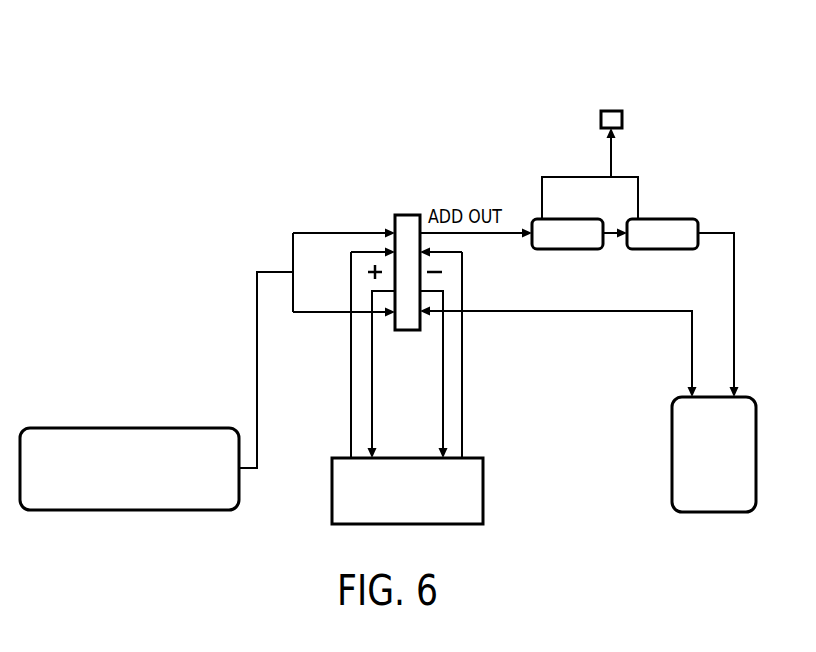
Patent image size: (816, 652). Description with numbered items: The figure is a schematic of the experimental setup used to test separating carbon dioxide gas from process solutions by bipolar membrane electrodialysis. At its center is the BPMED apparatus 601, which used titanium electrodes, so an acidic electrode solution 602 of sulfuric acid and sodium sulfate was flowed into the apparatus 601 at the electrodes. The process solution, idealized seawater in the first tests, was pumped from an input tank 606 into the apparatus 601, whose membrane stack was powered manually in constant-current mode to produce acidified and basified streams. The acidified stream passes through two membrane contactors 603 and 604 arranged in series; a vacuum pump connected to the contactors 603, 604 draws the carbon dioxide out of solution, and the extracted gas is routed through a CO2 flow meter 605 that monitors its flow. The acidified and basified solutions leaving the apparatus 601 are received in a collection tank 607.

The BPMED apparatus 601 is at (408, 214).
The acidic electrode solution 602 is at (332, 495).
The membrane contactor 603 is at (568, 251).
The membrane contactor 604 is at (662, 251).
The CO2 flow meter 605 is at (611, 110).
The input tank 606 is at (125, 427).
The collection tank 607 is at (672, 460).